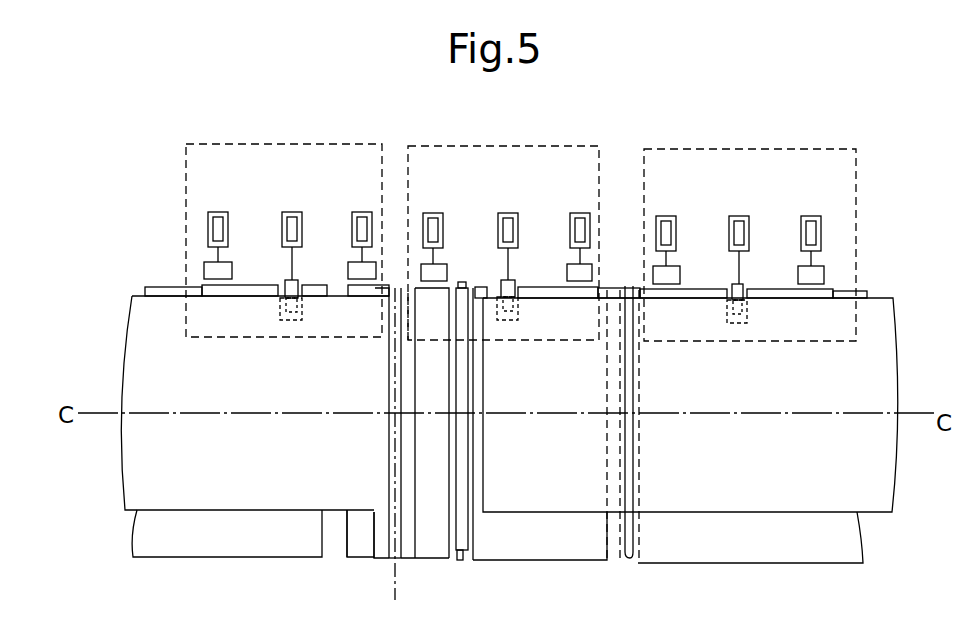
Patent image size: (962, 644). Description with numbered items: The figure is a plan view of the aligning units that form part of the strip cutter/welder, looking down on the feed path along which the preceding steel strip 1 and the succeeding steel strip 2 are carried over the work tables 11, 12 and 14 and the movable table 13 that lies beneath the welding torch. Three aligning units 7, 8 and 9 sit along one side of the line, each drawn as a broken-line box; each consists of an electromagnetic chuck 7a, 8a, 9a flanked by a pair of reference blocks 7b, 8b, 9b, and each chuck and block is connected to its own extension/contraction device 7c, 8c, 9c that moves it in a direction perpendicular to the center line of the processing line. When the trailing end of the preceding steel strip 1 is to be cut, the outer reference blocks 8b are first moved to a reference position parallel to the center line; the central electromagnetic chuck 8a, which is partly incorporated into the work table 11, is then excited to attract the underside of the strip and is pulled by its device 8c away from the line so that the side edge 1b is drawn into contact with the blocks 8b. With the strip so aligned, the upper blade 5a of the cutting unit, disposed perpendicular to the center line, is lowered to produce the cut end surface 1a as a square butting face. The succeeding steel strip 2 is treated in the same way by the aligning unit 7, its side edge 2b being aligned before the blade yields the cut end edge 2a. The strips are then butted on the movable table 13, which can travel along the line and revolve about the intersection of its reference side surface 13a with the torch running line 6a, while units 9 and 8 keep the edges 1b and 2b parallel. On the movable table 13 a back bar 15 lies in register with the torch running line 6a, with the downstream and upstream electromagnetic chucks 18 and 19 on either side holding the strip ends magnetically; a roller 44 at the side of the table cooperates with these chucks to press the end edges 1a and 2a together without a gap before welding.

The preceding steel strip 1 is at (135, 472).
The cut end surface of preceding steel strip 1a is at (390, 462).
The side edge of preceding steel strip 1b is at (198, 290).
The succeeding steel strip 2 is at (887, 482).
The cut end edge of succeeding steel strip 2a is at (473, 470).
The side edge of succeeding steel strip 2b is at (833, 295).
The upper blade 5a is at (627, 562).
The torch running line 6a is at (396, 593).
The aligning unit 7 is at (750, 148).
The electromagnetic chuck 7a is at (748, 295).
The reference block 7b is at (680, 278).
The extension/contraction device 7c is at (666, 216).
The aligning unit 8 is at (498, 145).
The electromagnetic chuck 8a is at (517, 292).
The reference block 8b is at (447, 276).
The extension/contraction device 8c is at (433, 213).
The aligning unit 9 is at (278, 143).
The electromagnetic chuck 9a is at (279, 286).
The reference block 9b is at (231, 273).
The extension/contraction device 9c is at (220, 212).
The work table 11 is at (778, 557).
The work table 12 is at (548, 552).
The movable table 13 is at (347, 543).
The reference side surface of movable table 13a is at (410, 287).
The work table 14 is at (217, 553).
The back bar 15 is at (392, 558).
The downstream side electromagnetic chuck 18 is at (373, 556).
The upstream side electromagnetic chuck 19 is at (405, 558).
The roller 44 is at (462, 562).